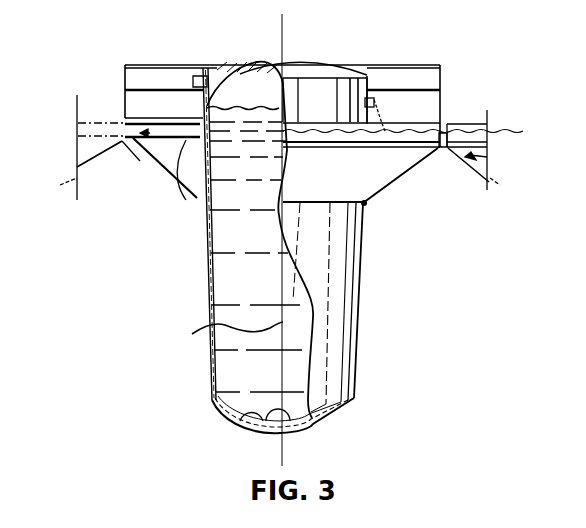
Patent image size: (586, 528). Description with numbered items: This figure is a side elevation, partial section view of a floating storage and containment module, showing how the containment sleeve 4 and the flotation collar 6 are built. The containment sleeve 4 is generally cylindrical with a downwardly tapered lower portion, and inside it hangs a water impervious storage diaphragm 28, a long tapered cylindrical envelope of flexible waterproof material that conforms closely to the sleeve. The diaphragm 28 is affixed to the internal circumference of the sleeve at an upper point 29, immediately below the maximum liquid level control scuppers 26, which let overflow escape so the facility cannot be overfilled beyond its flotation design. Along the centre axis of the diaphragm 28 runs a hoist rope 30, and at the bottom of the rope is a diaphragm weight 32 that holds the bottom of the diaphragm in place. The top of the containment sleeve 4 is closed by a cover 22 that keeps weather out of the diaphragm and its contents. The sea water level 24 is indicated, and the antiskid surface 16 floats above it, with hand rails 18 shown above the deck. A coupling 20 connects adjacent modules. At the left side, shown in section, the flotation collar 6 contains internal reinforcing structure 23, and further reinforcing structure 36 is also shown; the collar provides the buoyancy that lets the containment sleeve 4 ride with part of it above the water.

The containment sleeve 4 is at (360, 268).
The flotation collar 6 is at (80, 170).
The antiskid surface 16 is at (417, 119).
The hand rails 18 is at (428, 66).
The coupling 20 is at (140, 158).
The cover 22 is at (316, 73).
The internal reinforcing structure 23 is at (176, 184).
The sea water level 24 is at (470, 125).
The maximum liquid level control scuppers 26 is at (183, 97).
The water impervious storage diaphragm 28 is at (207, 272).
The upper point 29 is at (226, 78).
The hoist rope 30 is at (223, 335).
The diaphragm weight 32 is at (229, 418).
The reinforcing structure 36 is at (186, 199).